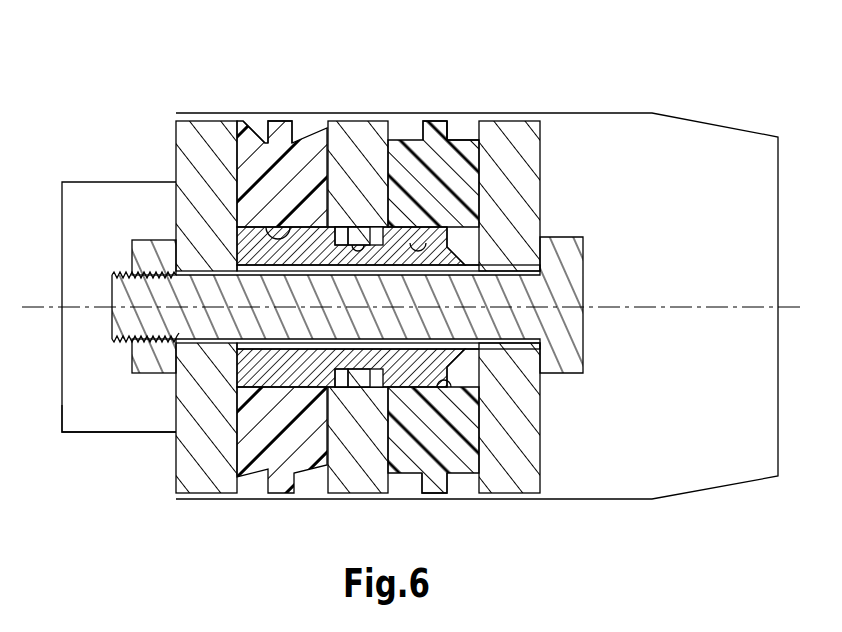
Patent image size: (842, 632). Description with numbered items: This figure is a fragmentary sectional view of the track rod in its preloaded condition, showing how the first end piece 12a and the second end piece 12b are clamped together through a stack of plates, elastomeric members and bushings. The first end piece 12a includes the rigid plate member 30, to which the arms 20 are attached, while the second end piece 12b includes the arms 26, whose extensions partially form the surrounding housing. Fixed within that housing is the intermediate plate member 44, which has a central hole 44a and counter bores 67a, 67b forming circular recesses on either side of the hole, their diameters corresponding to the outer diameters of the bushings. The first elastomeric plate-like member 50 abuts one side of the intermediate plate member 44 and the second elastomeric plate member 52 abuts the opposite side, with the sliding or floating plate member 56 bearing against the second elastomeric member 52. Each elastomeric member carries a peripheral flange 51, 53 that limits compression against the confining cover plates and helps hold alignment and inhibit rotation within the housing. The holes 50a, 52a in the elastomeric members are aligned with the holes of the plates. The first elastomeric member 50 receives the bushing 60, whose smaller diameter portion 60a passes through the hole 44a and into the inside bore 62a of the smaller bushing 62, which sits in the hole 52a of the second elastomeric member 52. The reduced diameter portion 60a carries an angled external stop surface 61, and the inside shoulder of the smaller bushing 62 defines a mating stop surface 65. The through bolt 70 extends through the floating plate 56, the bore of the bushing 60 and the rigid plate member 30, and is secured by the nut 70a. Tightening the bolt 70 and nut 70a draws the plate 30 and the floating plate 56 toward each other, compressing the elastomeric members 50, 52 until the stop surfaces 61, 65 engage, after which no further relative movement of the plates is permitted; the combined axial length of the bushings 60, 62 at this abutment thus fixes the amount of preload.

The first end piece 12a is at (78, 443).
The second end piece 12b is at (696, 108).
The arms 20 is at (110, 410).
The arms 26 is at (704, 209).
The rigid plate member 30 is at (210, 445).
The intermediate plate member 44 is at (360, 143).
The hole 44a is at (360, 246).
The first elastomeric plate-like member 50 is at (270, 177).
The hole 50a is at (290, 125).
The peripheral flange 51 is at (275, 150).
The second elastomeric plate member 52 is at (450, 160).
The hole 52a is at (443, 395).
The peripheral flange 53 is at (440, 135).
The sliding or floating plate member 56 is at (513, 431).
The bushing 60 is at (285, 365).
The smaller diameter portion 60a is at (418, 370).
The external stop surface 61 is at (455, 352).
The smaller bushing 62 is at (462, 220).
The inside bore 62a is at (452, 185).
The stop surface 65 is at (462, 255).
The counter bore 67a is at (336, 226).
The counter bore 67b is at (370, 372).
The through bolt 70 is at (552, 298).
The nut 70a is at (148, 262).